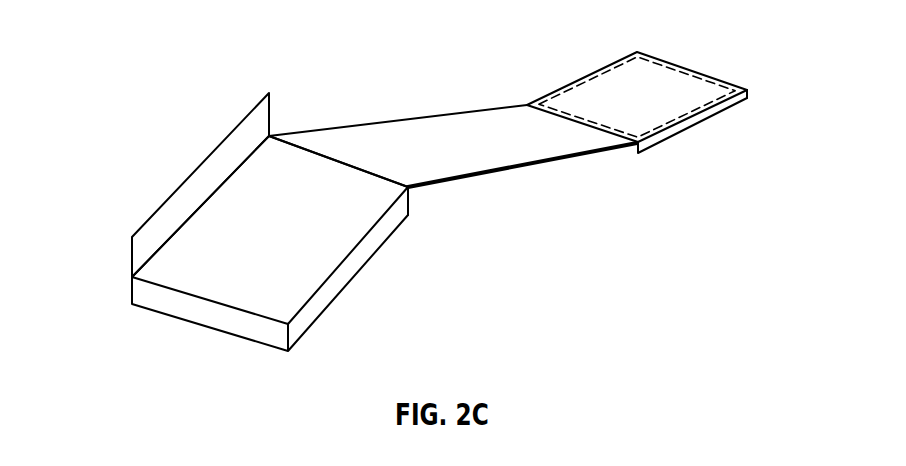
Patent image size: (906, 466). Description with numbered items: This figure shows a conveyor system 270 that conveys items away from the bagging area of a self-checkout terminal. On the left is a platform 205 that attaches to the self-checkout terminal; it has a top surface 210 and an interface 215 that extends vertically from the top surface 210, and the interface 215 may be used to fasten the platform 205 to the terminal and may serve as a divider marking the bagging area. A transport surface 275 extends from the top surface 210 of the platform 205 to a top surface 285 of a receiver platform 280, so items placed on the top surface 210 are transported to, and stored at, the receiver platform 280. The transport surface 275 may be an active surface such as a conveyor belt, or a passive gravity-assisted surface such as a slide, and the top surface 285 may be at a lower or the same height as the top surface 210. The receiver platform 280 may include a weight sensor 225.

The conveyor system 270 is at (133, 68).
The interface 215 is at (168, 195).
The platform 205 is at (246, 332).
The top surface 210 is at (332, 217).
The transport surface 275 is at (515, 160).
The weight sensor 225 is at (590, 80).
The receiver platform 280 is at (749, 93).
The top surface 285 is at (642, 132).